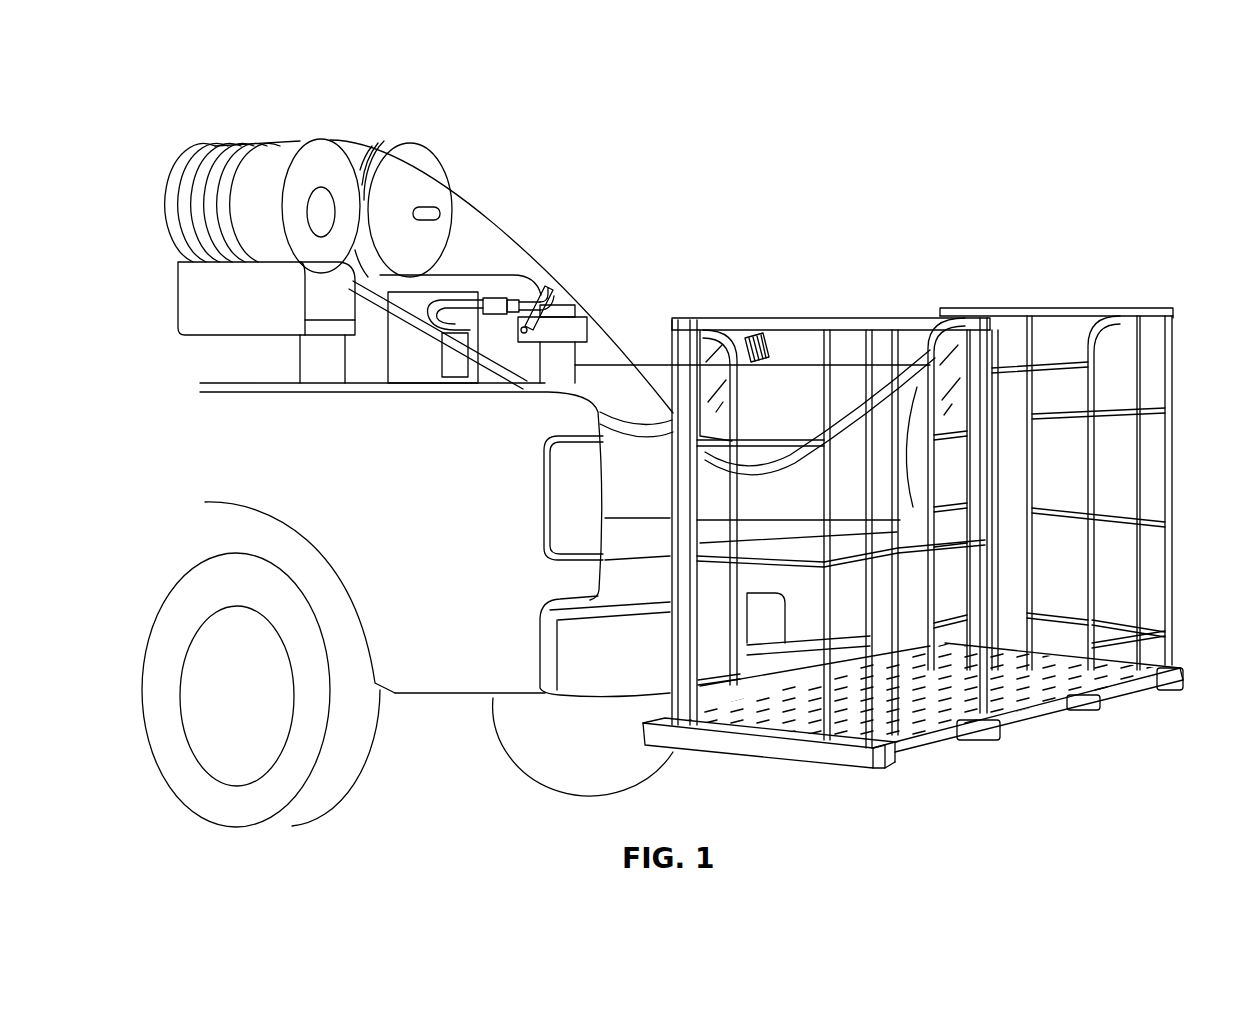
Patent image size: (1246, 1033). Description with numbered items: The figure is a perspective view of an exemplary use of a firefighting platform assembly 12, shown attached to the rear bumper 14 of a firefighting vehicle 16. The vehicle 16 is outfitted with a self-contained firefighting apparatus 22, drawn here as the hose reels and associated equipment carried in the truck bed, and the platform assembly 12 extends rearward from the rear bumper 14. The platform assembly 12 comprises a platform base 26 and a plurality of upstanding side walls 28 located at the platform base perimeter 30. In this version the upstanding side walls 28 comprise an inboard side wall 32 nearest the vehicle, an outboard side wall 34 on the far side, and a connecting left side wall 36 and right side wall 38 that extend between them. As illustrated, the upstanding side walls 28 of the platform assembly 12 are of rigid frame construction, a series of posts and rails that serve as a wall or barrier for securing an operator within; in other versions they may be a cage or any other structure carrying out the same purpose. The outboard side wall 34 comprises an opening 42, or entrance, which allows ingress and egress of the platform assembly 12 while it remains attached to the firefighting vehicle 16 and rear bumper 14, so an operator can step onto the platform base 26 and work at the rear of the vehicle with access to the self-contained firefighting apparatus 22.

The firefighting platform assembly 12 is at (937, 472).
The rear bumper 14 is at (595, 692).
The firefighting vehicle 16 is at (426, 720).
The self-contained firefighting apparatus 22 is at (492, 246).
The platform base 26 is at (941, 736).
The plurality of upstanding side walls 28 is at (1112, 288).
The platform base perimeter 30 is at (1035, 705).
The inboard side wall 32 is at (922, 248).
The outboard side wall 34 is at (986, 507).
The left side wall 36 is at (708, 320).
The right side wall 38 is at (1057, 310).
The opening 42 is at (1072, 443).